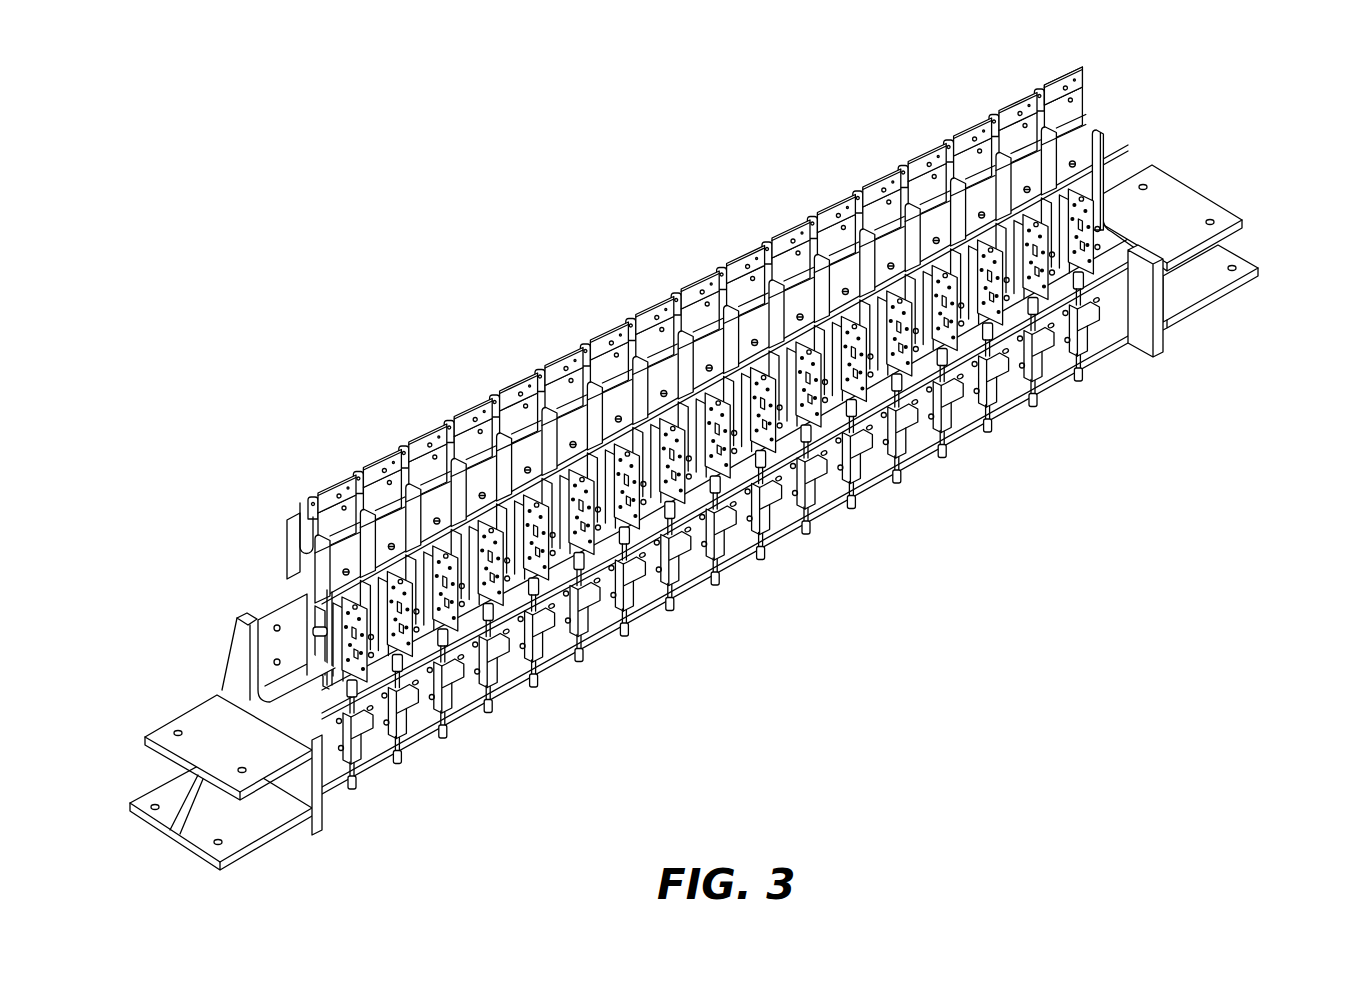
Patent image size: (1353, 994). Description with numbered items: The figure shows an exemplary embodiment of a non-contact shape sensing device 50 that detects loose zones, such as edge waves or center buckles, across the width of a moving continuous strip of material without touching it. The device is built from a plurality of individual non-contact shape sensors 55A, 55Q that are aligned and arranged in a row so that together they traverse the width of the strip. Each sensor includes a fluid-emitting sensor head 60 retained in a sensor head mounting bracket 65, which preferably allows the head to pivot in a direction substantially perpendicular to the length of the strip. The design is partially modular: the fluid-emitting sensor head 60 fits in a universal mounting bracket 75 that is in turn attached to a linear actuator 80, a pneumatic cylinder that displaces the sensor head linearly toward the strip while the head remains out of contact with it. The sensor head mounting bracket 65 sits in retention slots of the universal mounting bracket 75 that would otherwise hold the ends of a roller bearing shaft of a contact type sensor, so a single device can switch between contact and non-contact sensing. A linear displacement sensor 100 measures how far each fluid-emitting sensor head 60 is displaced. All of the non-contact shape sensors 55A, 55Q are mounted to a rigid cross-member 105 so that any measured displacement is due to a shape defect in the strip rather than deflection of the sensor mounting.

The non-contact shape sensing device 50 is at (233, 262).
The non-contact shape sensor 55A is at (255, 527).
The non-contact shape sensor 55Q is at (1133, 130).
The fluid-emitting sensor head 60 is at (596, 294).
The sensor head mounting bracket 65 is at (1085, 90).
The universal mounting bracket 75 is at (248, 548).
The linear actuator 80 is at (900, 427).
The linear displacement sensor 100 is at (734, 570).
The rigid cross-member 105 is at (322, 817).